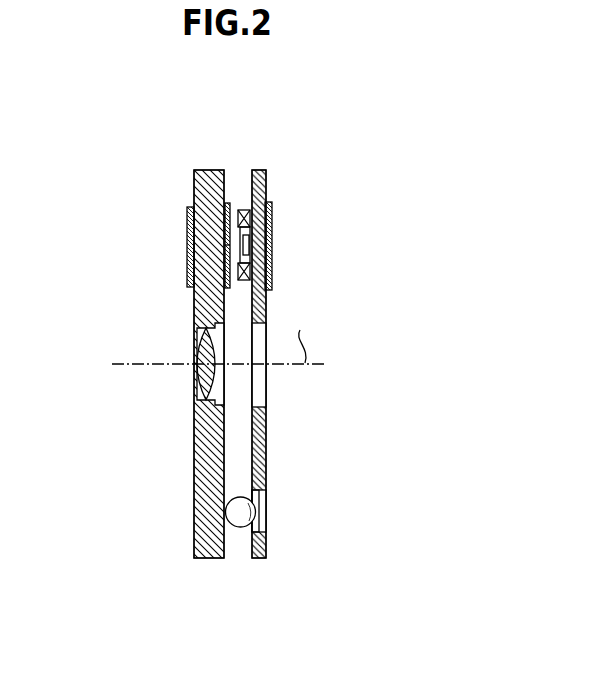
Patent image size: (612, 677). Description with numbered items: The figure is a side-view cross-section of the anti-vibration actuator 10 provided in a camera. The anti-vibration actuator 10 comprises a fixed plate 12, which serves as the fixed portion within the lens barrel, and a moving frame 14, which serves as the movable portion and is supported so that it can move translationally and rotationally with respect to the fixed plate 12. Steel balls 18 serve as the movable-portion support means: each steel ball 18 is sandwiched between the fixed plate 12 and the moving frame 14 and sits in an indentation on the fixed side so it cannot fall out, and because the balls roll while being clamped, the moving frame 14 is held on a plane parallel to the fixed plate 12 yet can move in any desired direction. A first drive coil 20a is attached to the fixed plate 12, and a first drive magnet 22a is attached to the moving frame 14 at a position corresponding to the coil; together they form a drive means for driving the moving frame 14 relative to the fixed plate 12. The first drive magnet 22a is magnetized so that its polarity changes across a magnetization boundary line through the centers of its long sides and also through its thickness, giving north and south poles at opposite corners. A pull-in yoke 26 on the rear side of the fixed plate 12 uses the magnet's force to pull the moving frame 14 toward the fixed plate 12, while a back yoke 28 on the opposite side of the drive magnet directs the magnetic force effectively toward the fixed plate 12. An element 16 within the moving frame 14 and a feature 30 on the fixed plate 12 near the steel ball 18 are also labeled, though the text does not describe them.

The anti-vibration actuator 10 is at (168, 562).
The fixed plate 12 is at (266, 173).
The moving frame 14 is at (194, 181).
The lens 16 is at (197, 378).
The steel ball 18 is at (241, 528).
The first drive coil 20a is at (250, 215).
The first drive magnet 22a is at (232, 208).
The pull-in yoke 26 is at (272, 269).
The back yoke 28 is at (187, 240).
The recess / ball receiving groove 30 is at (254, 490).